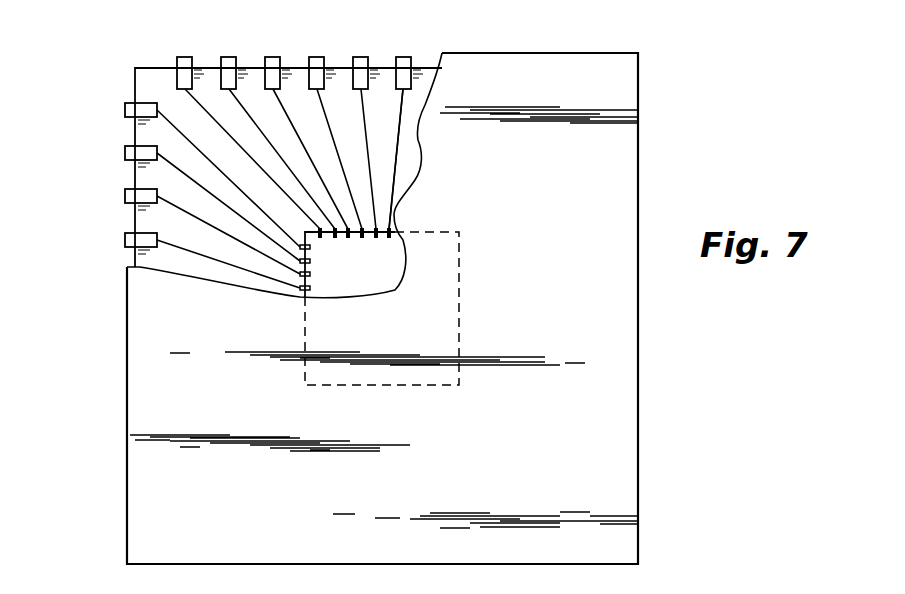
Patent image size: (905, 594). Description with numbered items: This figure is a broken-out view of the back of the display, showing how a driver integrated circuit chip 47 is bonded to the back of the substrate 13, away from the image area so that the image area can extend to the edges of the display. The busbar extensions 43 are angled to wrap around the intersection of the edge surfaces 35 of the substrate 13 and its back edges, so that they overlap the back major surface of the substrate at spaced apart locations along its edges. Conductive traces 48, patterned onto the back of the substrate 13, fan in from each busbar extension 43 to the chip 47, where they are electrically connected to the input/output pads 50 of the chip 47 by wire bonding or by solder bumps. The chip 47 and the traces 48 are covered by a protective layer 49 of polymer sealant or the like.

The substrate 13 is at (158, 80).
The edge surfaces 35 is at (135, 92).
The busbar extensions 43 is at (402, 57).
The driver integrated circuit chip 47 is at (375, 275).
The conductive traces 48 is at (398, 160).
The protective layer 49 is at (548, 472).
The input/output pads 50 is at (318, 277).